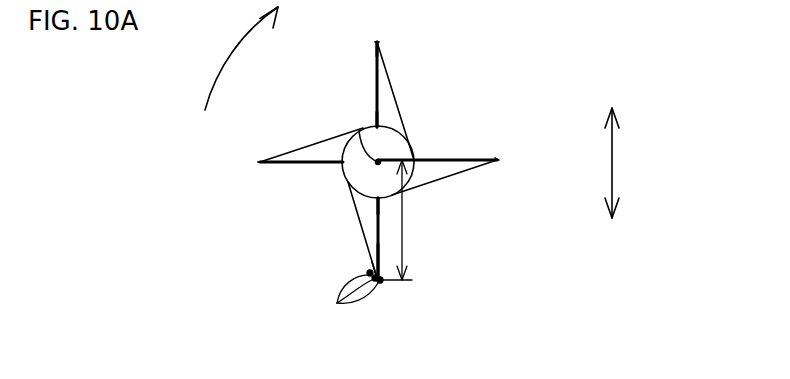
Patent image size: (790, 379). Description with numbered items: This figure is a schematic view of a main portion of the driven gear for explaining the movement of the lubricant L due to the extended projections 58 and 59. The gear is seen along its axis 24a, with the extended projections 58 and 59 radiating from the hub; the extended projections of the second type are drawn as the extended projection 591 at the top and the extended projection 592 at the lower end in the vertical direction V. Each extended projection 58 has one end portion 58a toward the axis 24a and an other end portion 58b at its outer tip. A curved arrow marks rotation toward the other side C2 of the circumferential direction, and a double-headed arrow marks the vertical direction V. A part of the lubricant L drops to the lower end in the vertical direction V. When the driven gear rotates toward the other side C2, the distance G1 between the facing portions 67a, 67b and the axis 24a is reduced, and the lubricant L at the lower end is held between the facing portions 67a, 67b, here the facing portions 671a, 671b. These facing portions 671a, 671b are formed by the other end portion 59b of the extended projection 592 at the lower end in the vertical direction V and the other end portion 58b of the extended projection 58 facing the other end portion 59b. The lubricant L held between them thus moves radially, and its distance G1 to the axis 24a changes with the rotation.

The axis 24a is at (359, 131).
The extended projection 58 is at (376, 80).
The one end portion 58a is at (376, 118).
The other end portion 58b is at (376, 44).
The extended projection 59 is at (278, 156).
The extended projection 591 is at (392, 88).
The extended projection 592 is at (360, 222).
The other end portion 59b is at (372, 262).
The facing portion 67a is at (378, 43).
The facing portion 67b is at (365, 181).
The facing portion 671a is at (407, 320).
The facing portion 671b is at (448, 322).
The lubricant L is at (348, 299).
The other side of the circumferential direction C2 is at (230, 57).
The distance G1 is at (420, 220).
The vertical direction V is at (613, 161).